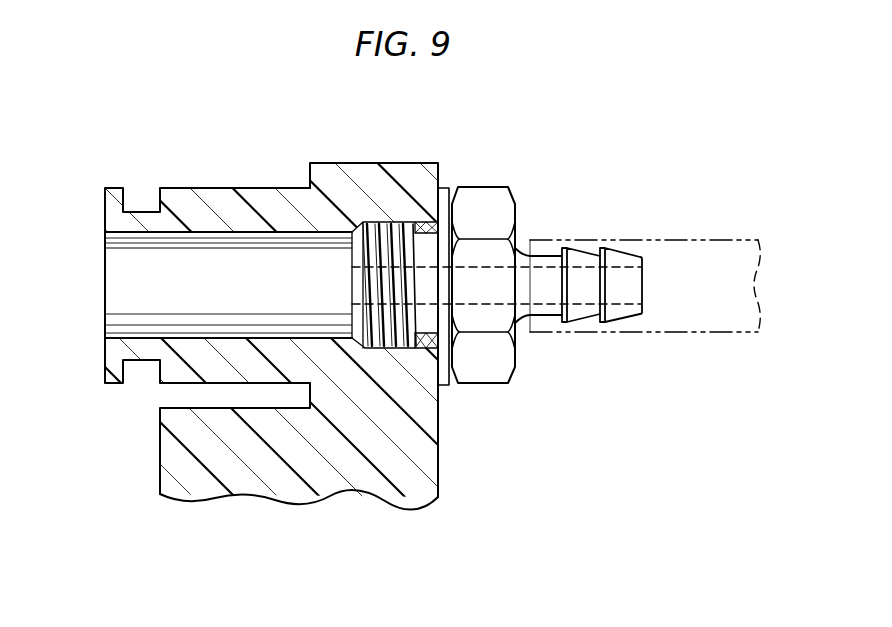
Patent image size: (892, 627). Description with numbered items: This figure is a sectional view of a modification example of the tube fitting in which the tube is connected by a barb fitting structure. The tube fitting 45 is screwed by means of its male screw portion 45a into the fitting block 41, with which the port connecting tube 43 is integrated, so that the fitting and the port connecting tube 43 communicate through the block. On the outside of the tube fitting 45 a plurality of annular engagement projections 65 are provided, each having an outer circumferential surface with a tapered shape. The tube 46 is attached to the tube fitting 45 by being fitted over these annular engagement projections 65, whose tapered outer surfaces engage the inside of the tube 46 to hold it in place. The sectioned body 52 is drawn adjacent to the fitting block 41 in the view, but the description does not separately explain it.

The fitting block 41 is at (372, 170).
The port connecting tube 43 is at (211, 193).
The tube fitting 45 is at (496, 192).
The male screw portion 45a is at (440, 392).
The tube 46 is at (690, 238).
The base block 52 is at (258, 497).
The annular engagement projections 65 is at (576, 322).